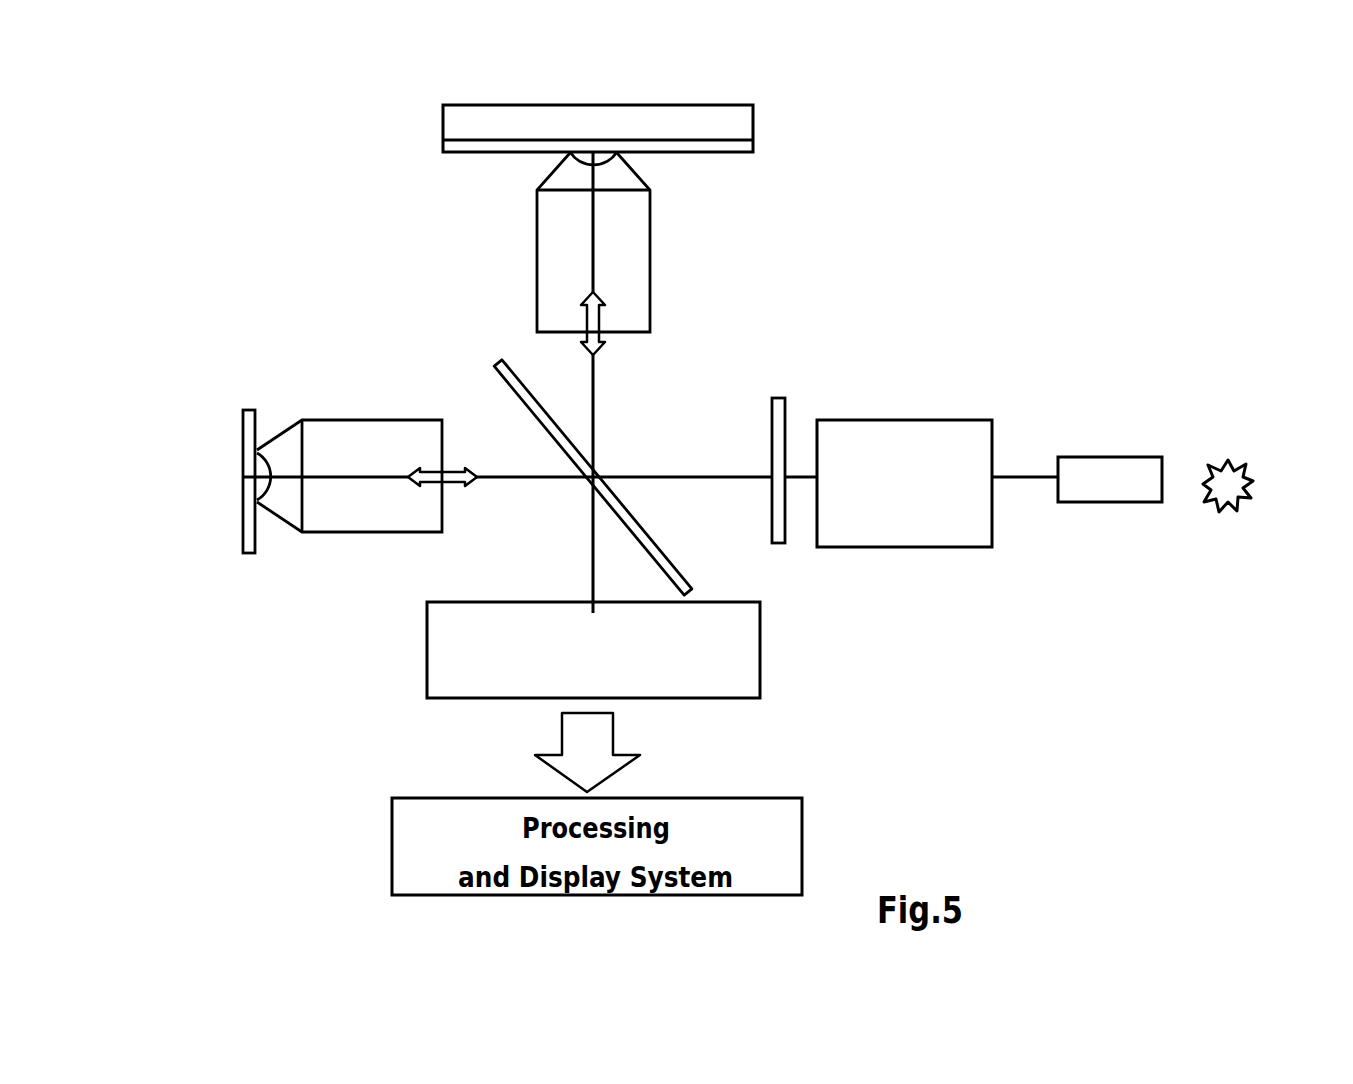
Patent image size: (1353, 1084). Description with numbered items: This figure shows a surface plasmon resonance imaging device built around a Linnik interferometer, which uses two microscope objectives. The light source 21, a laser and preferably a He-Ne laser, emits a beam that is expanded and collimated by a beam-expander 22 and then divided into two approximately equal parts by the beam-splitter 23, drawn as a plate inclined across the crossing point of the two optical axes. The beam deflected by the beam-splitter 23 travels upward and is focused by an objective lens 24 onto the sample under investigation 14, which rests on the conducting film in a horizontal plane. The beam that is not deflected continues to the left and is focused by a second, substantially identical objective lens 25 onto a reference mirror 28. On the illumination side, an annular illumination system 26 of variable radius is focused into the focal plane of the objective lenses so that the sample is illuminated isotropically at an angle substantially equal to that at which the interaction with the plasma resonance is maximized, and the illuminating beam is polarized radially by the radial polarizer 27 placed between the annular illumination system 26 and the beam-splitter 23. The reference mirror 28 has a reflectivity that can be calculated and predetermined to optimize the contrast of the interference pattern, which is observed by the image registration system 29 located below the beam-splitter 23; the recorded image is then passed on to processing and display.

The sample under investigation 14 is at (655, 130).
The light source 21 is at (1220, 508).
The beam-expander 22 is at (1110, 440).
The beam-splitter 23 is at (603, 477).
The objective lens 24 is at (626, 242).
The second objective lens 25 is at (349, 442).
The annular illumination system 26 is at (904, 517).
The radial polarizer 27 is at (778, 425).
The reference mirror 28 is at (196, 454).
The image registration system 29 is at (552, 650).